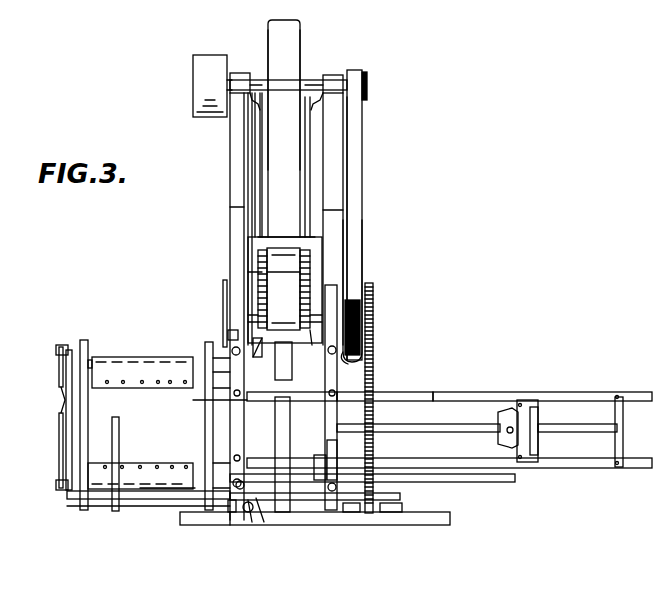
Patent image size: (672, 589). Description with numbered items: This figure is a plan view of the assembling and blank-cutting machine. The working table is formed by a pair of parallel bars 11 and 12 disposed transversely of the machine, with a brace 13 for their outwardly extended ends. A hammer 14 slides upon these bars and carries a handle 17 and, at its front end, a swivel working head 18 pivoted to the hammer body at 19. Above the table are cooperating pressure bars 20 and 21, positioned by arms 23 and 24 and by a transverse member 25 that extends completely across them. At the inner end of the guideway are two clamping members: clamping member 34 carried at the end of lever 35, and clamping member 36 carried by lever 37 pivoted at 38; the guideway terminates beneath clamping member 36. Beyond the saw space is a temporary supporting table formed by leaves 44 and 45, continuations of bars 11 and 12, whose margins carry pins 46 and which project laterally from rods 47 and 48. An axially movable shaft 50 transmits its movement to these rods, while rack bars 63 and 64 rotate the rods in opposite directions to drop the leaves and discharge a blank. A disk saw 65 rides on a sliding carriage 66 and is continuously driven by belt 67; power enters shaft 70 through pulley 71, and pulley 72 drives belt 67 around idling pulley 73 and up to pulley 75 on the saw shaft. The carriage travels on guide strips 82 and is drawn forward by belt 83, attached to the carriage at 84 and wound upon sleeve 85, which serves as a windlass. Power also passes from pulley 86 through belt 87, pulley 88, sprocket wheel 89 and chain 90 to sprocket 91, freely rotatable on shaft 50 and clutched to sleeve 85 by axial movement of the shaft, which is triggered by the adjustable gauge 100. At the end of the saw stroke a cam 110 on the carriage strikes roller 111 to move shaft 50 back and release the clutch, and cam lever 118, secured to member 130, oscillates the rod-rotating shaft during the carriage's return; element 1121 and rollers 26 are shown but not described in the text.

The table bar 11 is at (445, 459).
The table bar 12 is at (452, 393).
The brace 13 is at (397, 426).
The hammer 14 is at (538, 400).
The handle 17 is at (540, 423).
The swivel working head 18 is at (500, 420).
The pivot 19 is at (508, 433).
The pressure bar 20 is at (400, 475).
The pressure bar 21 is at (400, 392).
The arm 23 is at (335, 470).
The arm 24 is at (338, 379).
The transverse member 25 is at (248, 407).
The rollers 26 is at (232, 352).
The clamping member 34 is at (262, 397).
The lever 35 is at (262, 272).
The clamping member 36 is at (230, 442).
The lever 37 is at (228, 373).
The pivot 38 is at (230, 333).
The supporting leaf 44 is at (162, 388).
The supporting leaf 45 is at (172, 465).
The pins 46 is at (124, 386).
The rod 47 is at (90, 360).
The rod 48 is at (140, 495).
The shaft 50 is at (165, 504).
The rack bar 63 is at (57, 393).
The rack bar 64 is at (57, 460).
The disk saw 65 is at (222, 296).
The sliding carriage 66 is at (250, 273).
The belt 67 is at (275, 32).
The shaft 70 is at (316, 92).
The pulley 71 is at (207, 63).
The pulley 72 is at (301, 33).
The idling pulley 73 is at (280, 257).
The pulley 75 is at (309, 338).
The guide strips 82 is at (237, 213).
The belt 83 is at (289, 425).
The belt attachment 84 is at (285, 362).
The sleeve 85 is at (305, 514).
The pulley 86 is at (368, 82).
The belt 87 is at (356, 137).
The pulley 88 is at (361, 265).
The sprocket wheel 89 is at (374, 292).
The chain 90 is at (368, 362).
The sprocket 91 is at (356, 514).
The gauge 100 is at (119, 440).
The cam 110 is at (258, 355).
The roller 111 is at (253, 522).
The cam lever 118 is at (232, 514).
The member 130 is at (246, 513).
The link 1121 is at (264, 524).